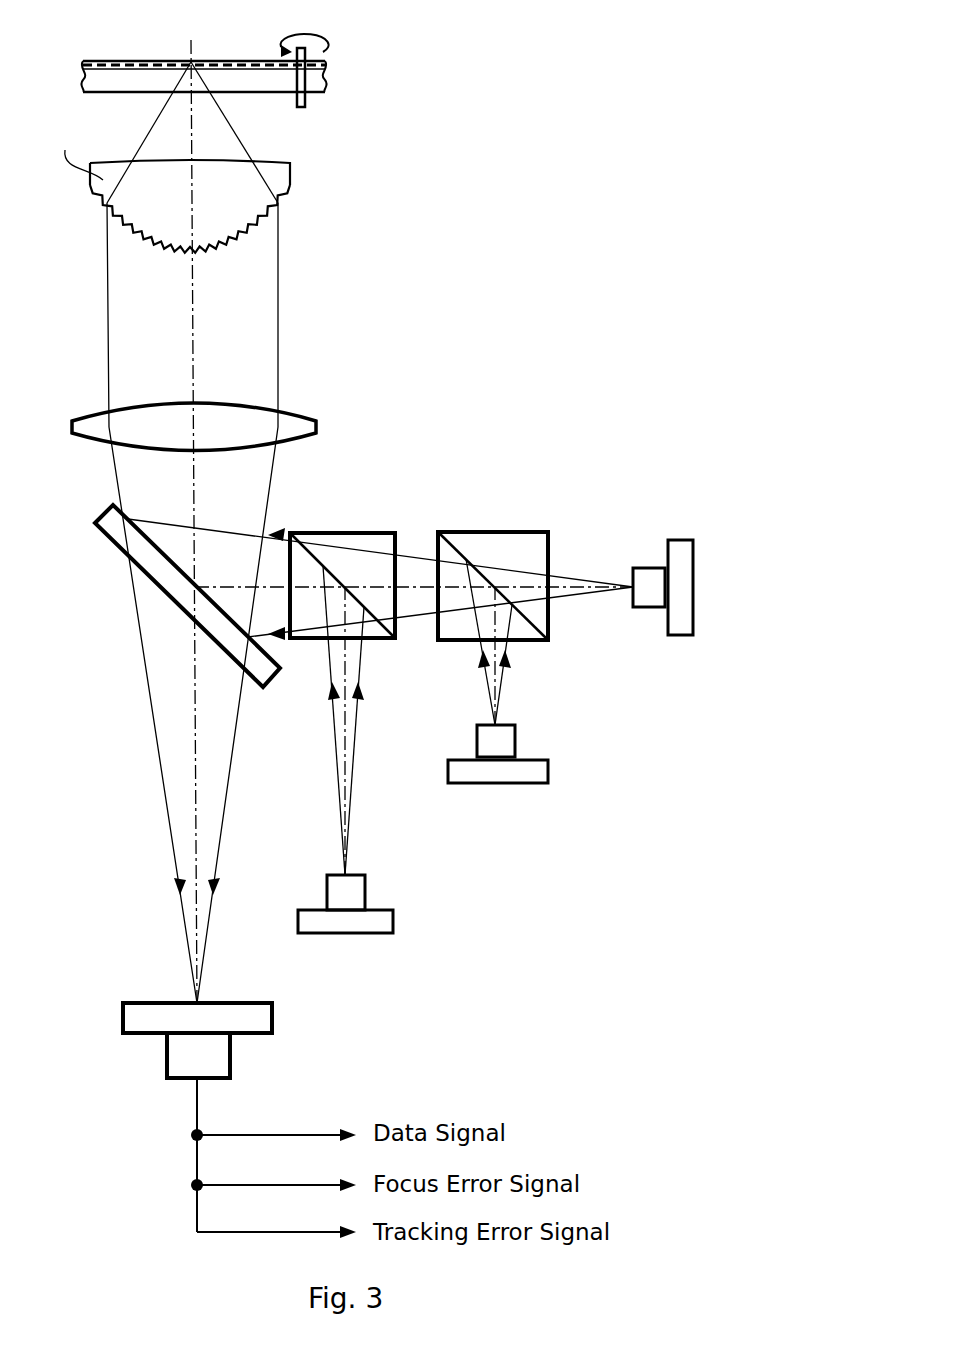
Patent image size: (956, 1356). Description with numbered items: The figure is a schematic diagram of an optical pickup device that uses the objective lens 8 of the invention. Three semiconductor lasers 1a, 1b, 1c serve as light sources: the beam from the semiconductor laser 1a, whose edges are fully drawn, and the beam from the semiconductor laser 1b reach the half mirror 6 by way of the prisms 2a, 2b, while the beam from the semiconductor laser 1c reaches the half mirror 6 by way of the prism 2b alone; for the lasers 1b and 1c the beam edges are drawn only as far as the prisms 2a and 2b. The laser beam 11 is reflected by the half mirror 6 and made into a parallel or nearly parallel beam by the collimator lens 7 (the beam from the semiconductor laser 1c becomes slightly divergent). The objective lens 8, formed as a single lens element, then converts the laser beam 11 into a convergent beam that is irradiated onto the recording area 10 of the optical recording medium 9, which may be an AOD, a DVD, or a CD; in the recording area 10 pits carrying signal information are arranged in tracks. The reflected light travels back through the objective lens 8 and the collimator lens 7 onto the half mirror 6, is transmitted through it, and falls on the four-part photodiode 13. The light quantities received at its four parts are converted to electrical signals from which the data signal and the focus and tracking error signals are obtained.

The recording area 10 is at (108, 62).
The optical recording medium 9 is at (362, 108).
The objective lens 8 is at (322, 188).
The collimator lens 7 is at (302, 423).
The half mirror 6 is at (113, 527).
The laser beam 11 is at (283, 532).
The prism 2b is at (377, 533).
The prism 2a is at (515, 532).
The semiconductor laser 1a is at (647, 568).
The semiconductor laser 1b is at (518, 738).
The semiconductor laser 1c is at (366, 886).
The four-part photodiode 13 is at (273, 1017).